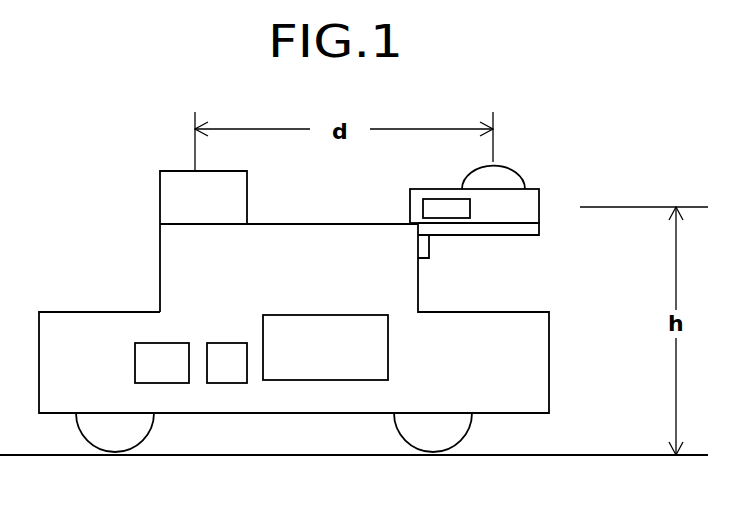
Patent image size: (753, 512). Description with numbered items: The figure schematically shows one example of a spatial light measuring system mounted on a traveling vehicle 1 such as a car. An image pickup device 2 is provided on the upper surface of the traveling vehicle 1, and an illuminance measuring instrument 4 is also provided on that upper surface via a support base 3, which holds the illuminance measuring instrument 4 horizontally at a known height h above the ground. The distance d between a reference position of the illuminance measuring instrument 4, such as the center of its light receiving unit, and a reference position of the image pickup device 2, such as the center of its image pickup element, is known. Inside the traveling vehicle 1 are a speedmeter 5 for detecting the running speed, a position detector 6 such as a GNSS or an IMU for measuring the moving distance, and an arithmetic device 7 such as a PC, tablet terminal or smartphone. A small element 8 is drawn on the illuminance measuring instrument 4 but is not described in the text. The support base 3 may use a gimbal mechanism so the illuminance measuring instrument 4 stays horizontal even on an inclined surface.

The traveling vehicle 1 is at (549, 339).
The image pickup device 2 is at (158, 197).
The support base 3 is at (520, 236).
The illuminance measuring instrument 4 is at (539, 208).
The speedmeter 5 is at (172, 343).
The position detector 6 is at (230, 343).
The arithmetic device 7 is at (345, 315).
The sensor window 8 is at (437, 190).